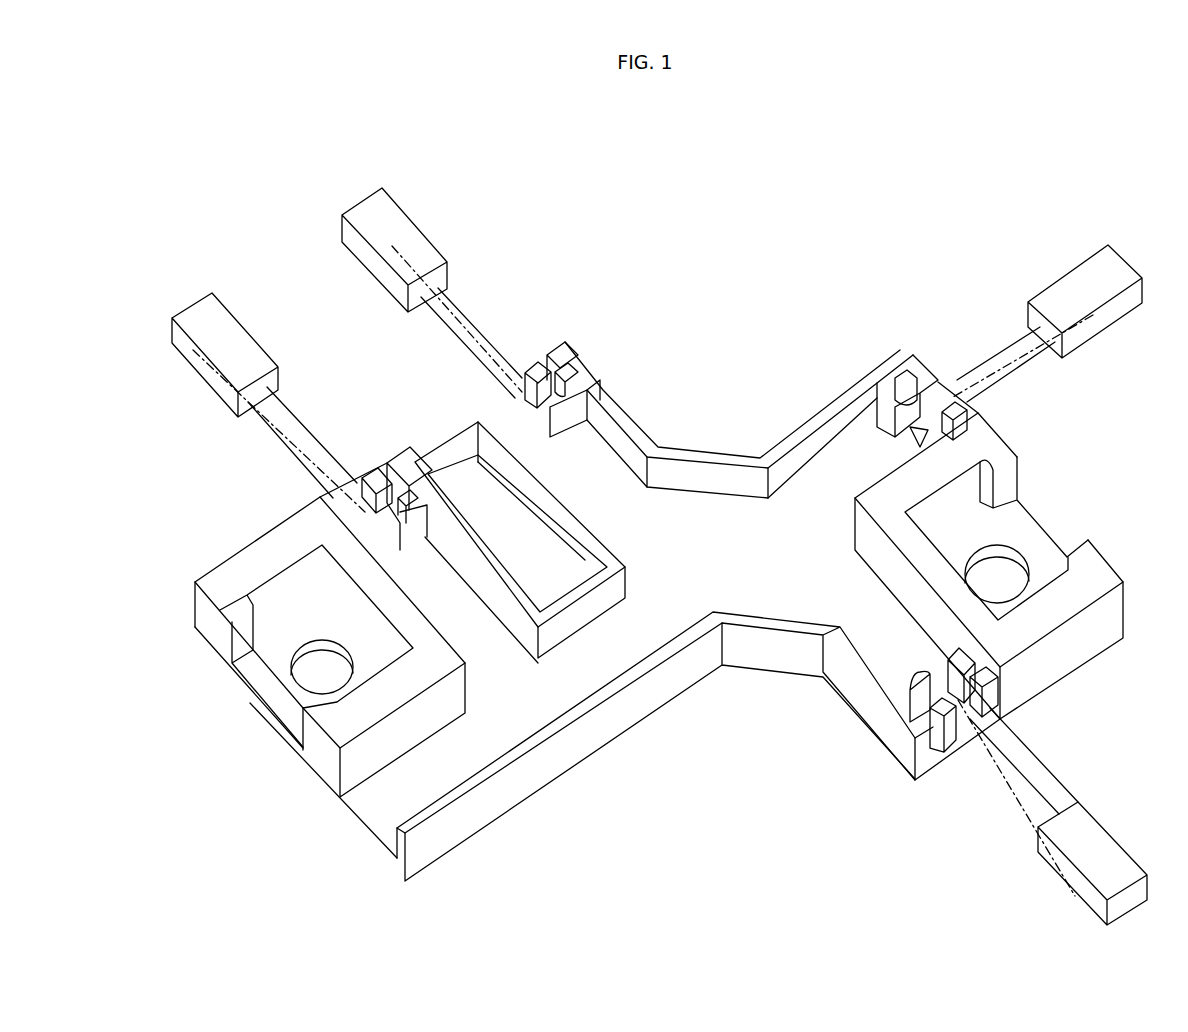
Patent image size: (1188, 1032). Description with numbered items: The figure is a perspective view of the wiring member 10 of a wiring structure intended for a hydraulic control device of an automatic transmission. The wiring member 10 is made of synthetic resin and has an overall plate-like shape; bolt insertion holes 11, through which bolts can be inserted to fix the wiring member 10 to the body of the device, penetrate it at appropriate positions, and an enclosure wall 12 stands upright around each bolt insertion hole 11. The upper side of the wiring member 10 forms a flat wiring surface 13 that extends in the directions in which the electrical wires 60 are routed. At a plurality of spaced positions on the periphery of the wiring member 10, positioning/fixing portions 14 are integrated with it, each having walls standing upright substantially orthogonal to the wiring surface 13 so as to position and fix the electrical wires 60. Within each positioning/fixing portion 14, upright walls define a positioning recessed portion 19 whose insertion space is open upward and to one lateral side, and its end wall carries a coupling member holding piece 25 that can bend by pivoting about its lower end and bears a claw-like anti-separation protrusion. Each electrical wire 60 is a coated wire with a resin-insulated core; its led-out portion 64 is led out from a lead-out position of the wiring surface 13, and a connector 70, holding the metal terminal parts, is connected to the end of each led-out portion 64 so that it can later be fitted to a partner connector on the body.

The wiring member 10 is at (735, 455).
The bolt insertion hole 11 is at (300, 688).
The enclosure wall 12 is at (250, 555).
The wiring surface 13 is at (605, 480).
The positioning/fixing portion 14 is at (575, 295).
The positioning recessed portion 19 is at (563, 380).
The coupling member holding piece 25 is at (538, 375).
The electrical wire 60 is at (298, 433).
The led-out portion 64 is at (266, 423).
The connector 70 is at (202, 310).